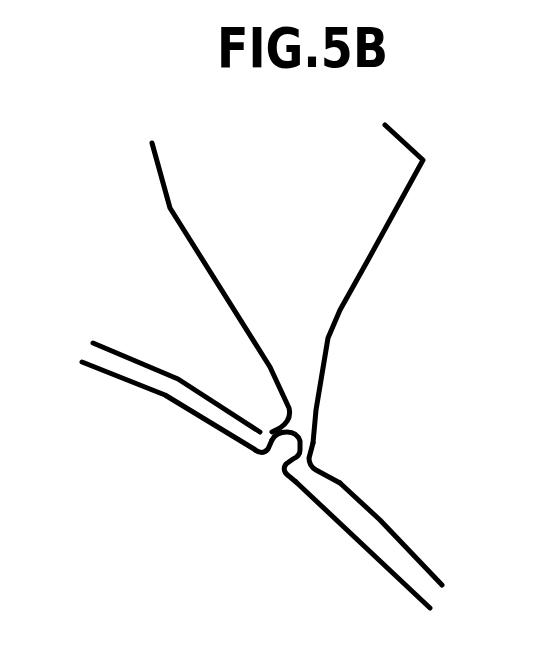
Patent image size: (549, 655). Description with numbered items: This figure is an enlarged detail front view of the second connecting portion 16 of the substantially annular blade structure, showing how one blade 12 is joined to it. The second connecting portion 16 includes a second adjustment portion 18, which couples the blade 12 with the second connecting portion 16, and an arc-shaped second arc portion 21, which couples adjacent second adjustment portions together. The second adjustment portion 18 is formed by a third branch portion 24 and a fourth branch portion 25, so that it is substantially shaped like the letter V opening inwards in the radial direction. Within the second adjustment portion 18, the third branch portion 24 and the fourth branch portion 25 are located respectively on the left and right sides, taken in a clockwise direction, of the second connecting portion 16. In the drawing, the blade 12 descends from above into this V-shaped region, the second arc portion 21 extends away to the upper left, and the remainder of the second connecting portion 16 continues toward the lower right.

The blade 12 is at (392, 177).
The second connecting portion 16 is at (380, 560).
The second adjustment portion 18 is at (261, 469).
The second arc portion 21 is at (118, 370).
The third branch portion 24 is at (272, 431).
The fourth branch portion 25 is at (308, 447).